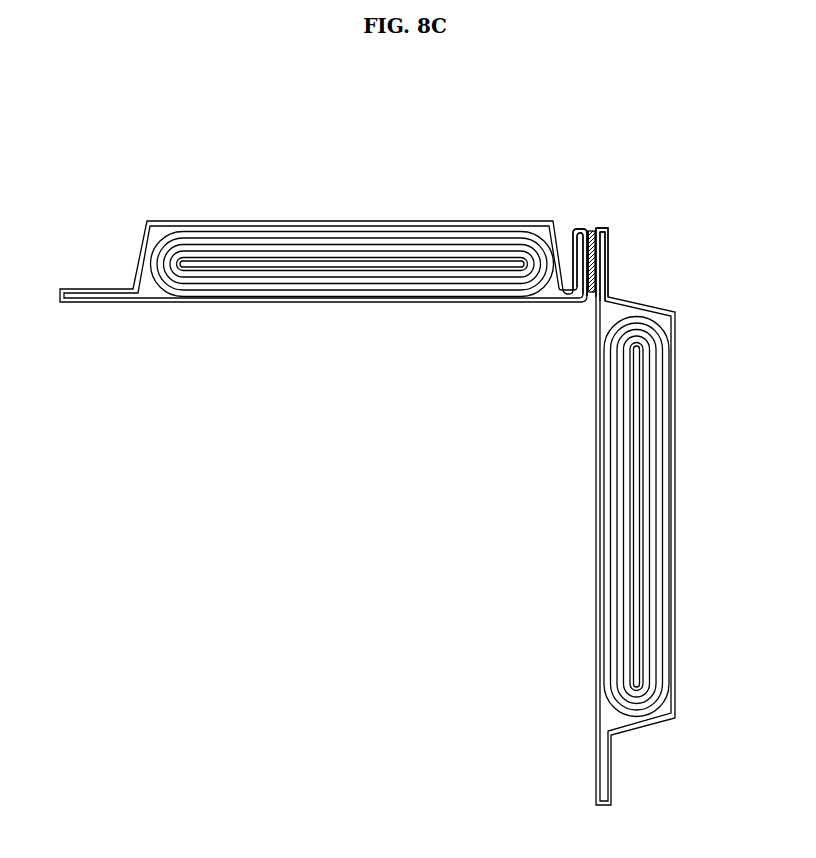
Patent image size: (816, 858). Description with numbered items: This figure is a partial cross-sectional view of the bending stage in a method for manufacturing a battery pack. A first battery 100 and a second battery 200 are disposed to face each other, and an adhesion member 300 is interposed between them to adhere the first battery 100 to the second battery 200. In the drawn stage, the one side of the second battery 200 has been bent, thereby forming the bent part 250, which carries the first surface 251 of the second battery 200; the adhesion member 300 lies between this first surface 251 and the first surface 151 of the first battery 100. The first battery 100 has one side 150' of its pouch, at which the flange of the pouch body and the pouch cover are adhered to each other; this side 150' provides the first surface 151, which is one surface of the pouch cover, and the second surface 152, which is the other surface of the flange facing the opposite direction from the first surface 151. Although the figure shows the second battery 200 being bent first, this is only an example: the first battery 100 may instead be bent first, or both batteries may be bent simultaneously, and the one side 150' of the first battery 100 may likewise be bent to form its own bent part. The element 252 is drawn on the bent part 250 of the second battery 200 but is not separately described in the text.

The first battery 100 is at (587, 531).
The second battery 200 is at (285, 317).
The bent part 250 is at (576, 207).
The folded pouch film / insulating member 252 is at (572, 246).
The first surface 251 is at (605, 231).
The one side of the pouch 150' is at (680, 256).
The first surface 151 is at (602, 290).
The second surface 152 is at (611, 251).
The adhesion member 300 is at (592, 293).